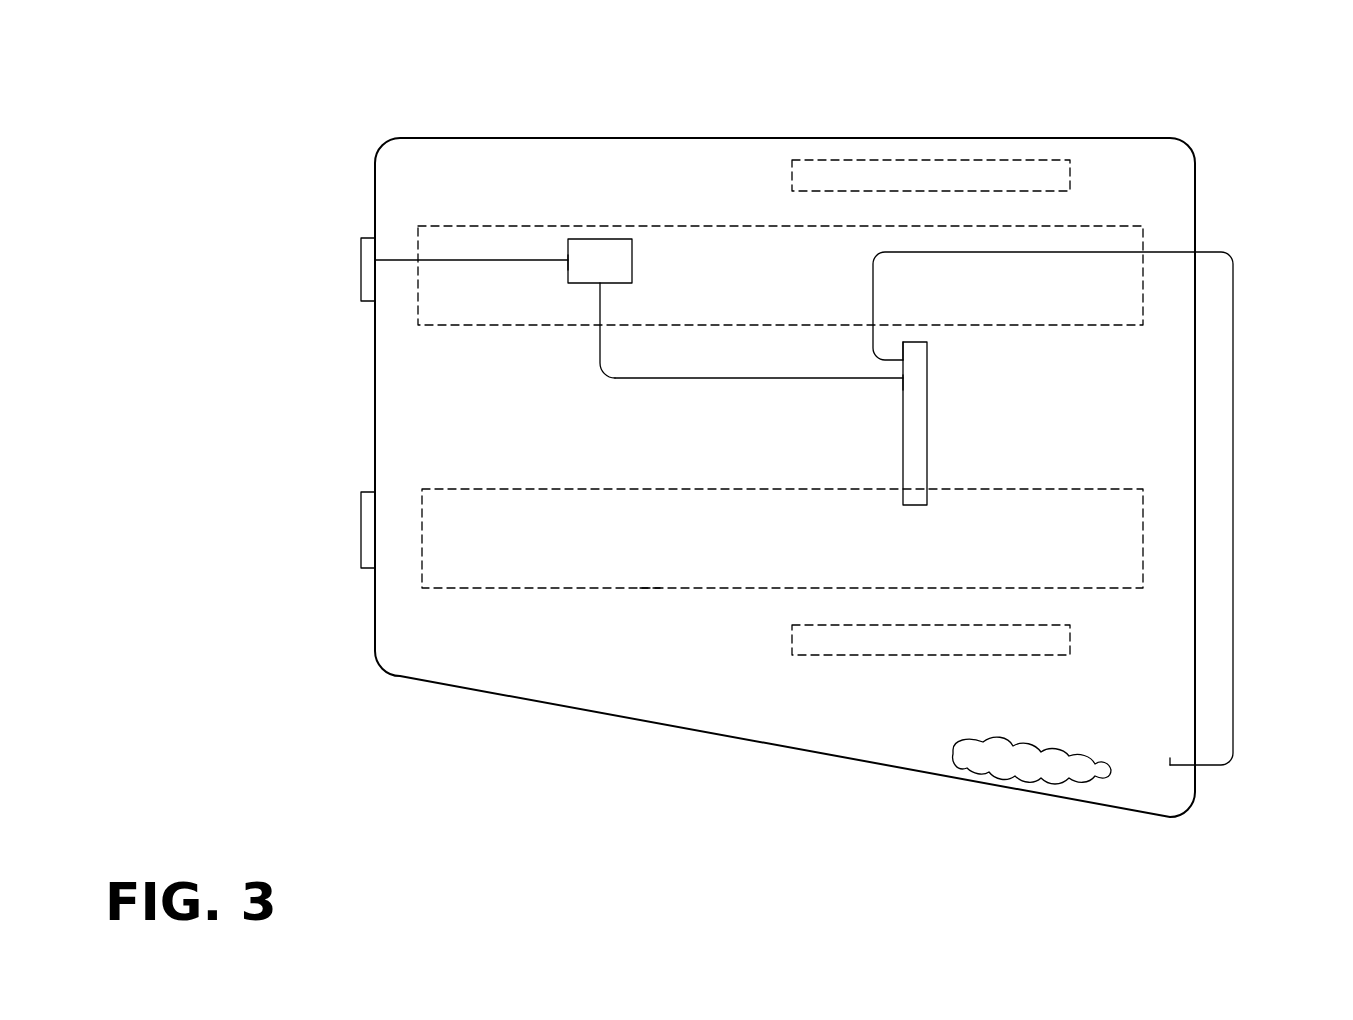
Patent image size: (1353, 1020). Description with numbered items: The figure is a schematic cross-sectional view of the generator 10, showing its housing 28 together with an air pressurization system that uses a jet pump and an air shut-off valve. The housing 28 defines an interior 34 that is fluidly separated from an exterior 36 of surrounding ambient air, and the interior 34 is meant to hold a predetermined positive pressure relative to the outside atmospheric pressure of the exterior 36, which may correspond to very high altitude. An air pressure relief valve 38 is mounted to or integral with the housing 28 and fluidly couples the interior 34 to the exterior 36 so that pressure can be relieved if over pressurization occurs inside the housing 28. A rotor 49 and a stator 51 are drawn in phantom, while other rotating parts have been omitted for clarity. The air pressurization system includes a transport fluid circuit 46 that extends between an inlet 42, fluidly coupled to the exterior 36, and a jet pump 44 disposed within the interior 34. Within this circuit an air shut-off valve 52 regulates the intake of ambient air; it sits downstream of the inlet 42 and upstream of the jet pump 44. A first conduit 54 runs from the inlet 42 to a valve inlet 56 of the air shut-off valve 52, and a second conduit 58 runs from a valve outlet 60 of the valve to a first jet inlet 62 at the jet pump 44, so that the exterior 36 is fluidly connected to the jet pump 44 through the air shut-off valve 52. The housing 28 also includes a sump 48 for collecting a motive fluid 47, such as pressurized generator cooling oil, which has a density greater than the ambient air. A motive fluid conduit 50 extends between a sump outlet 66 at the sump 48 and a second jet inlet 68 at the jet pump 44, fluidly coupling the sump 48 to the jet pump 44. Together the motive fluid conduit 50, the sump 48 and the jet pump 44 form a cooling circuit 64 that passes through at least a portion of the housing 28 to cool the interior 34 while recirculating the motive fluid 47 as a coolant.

The generator 10 is at (1030, 132).
The housing 28 is at (848, 138).
The interior 34 is at (755, 578).
The exterior 36 is at (208, 407).
The air pressure relief valve 38 is at (361, 532).
The inlet 42 is at (361, 268).
The jet pump 44 is at (927, 410).
The transport fluid circuit 46 is at (445, 257).
The motive fluid 47 is at (1045, 772).
The sump 48 is at (1062, 748).
The rotor 49 is at (650, 590).
The motive fluid conduit 50 is at (1233, 305).
The stator 51 is at (830, 657).
The air shut-off valve 52 is at (605, 252).
The first conduit 54 is at (515, 262).
The valve inlet 56 is at (568, 262).
The second conduit 58 is at (655, 380).
The valve outlet 60 is at (603, 284).
The first jet inlet 62 is at (903, 383).
The cooling circuit 64 is at (1155, 241).
The sump outlet 66 is at (1170, 765).
The second jet inlet 68 is at (903, 345).